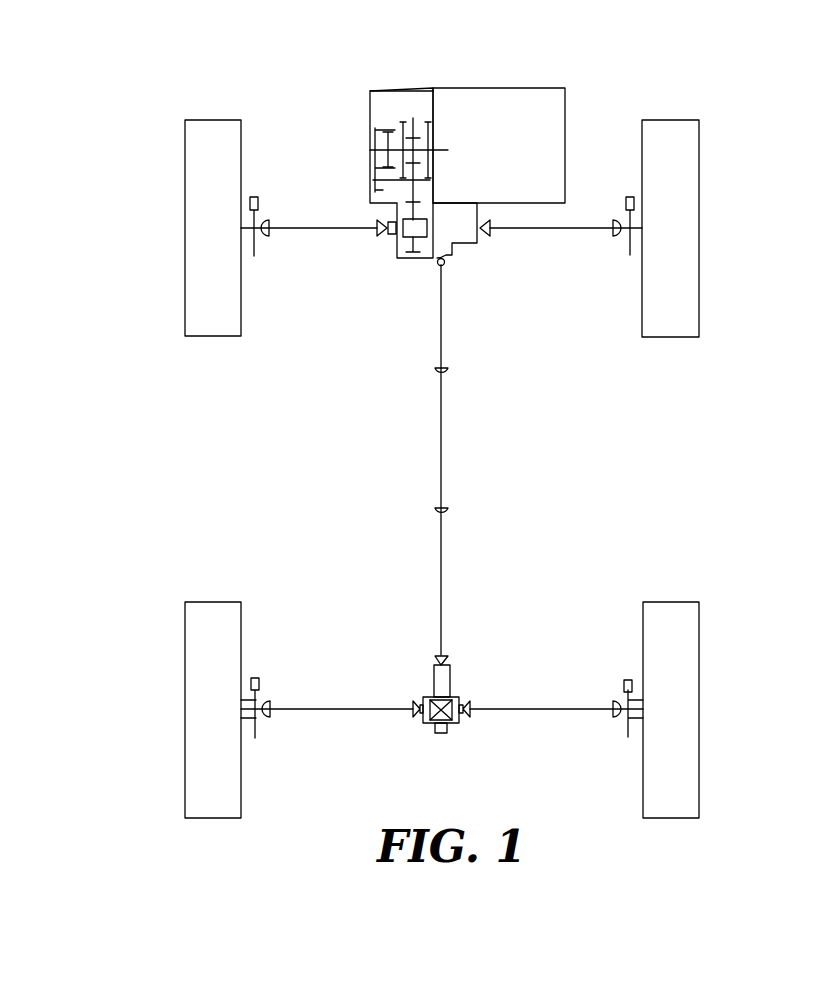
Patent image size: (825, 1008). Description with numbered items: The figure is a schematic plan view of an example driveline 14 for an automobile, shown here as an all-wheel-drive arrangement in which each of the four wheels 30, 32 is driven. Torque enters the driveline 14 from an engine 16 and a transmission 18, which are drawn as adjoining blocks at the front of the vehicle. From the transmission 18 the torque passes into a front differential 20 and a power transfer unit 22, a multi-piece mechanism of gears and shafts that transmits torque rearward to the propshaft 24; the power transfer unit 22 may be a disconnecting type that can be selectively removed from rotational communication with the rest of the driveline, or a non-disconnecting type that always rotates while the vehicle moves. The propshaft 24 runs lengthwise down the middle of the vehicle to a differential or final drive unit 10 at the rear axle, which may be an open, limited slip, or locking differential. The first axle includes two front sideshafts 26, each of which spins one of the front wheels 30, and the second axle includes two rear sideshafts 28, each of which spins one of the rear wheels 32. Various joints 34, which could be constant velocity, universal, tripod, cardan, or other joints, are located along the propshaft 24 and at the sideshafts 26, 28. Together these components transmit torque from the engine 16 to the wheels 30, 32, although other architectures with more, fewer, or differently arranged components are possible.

The differential or final drive unit 10 is at (455, 685).
The driveline 14 is at (597, 455).
The engine 16 is at (545, 110).
The transmission 18 is at (388, 100).
The front differential 20 is at (405, 237).
The power transfer unit 22 is at (462, 246).
The propshaft 24 is at (441, 439).
The front sideshafts 26 is at (315, 226).
The rear sideshafts 28 is at (343, 708).
The front wheels 30 is at (211, 305).
The rear wheels 32 is at (215, 770).
The joints 34 is at (271, 237).